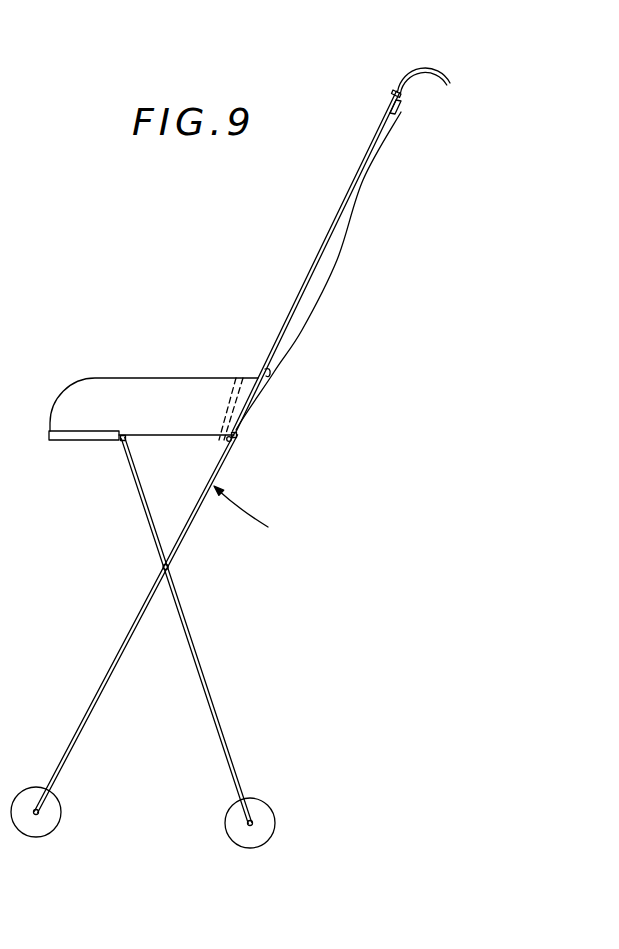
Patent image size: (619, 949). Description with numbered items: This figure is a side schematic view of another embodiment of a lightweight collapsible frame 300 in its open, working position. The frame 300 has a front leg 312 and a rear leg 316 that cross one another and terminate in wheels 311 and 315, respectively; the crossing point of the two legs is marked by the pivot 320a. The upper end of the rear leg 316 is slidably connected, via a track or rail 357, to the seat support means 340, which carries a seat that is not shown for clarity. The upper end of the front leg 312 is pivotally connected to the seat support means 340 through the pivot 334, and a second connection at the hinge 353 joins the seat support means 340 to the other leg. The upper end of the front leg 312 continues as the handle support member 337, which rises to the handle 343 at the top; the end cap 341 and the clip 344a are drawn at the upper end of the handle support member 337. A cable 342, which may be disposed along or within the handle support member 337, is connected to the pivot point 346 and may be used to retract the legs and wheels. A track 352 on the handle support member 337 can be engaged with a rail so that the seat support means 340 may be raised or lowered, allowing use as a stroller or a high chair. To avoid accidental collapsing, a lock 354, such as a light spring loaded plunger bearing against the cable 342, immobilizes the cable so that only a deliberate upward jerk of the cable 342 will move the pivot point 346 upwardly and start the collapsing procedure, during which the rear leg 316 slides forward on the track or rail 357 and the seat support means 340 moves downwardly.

The collapsible frame 300 is at (260, 513).
The wheel 311 is at (60, 808).
The front leg 312 is at (106, 677).
The wheel 315 is at (272, 811).
The rear leg 316 is at (216, 707).
The leg pivot 320a is at (170, 566).
The pivot 334 is at (240, 434).
The handle support member 337 is at (313, 252).
The seat support means 340 is at (125, 388).
The handle end cap 341 is at (396, 92).
The cable 342 is at (338, 256).
The handle 343 is at (432, 67).
The clip 344a is at (394, 114).
The pivot point 346 is at (236, 442).
The track 352 is at (268, 405).
The front seat hinge 353 is at (126, 440).
The lock 354 is at (283, 371).
The track or rail 357 is at (94, 443).